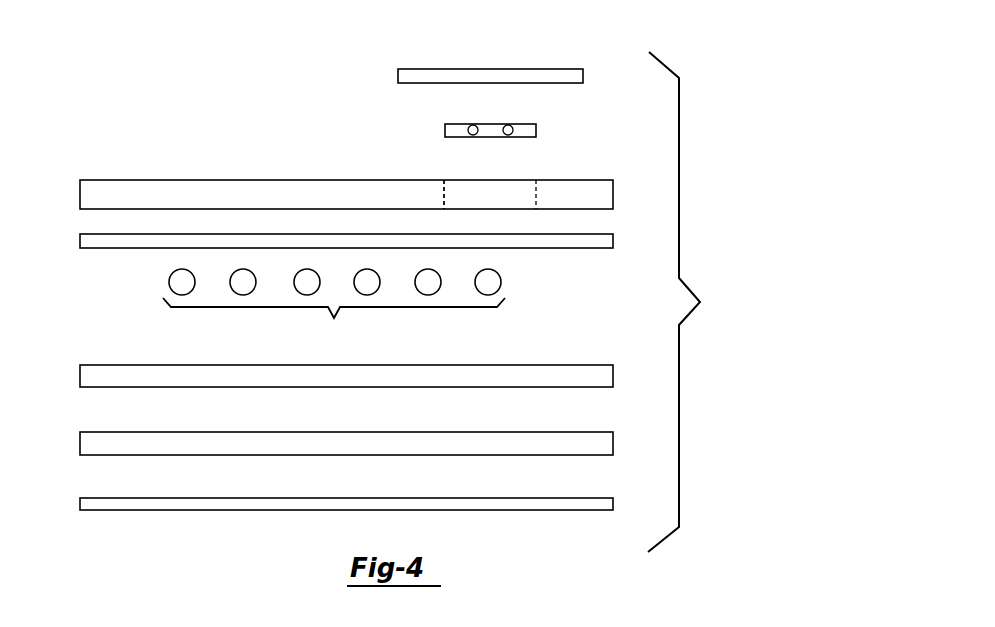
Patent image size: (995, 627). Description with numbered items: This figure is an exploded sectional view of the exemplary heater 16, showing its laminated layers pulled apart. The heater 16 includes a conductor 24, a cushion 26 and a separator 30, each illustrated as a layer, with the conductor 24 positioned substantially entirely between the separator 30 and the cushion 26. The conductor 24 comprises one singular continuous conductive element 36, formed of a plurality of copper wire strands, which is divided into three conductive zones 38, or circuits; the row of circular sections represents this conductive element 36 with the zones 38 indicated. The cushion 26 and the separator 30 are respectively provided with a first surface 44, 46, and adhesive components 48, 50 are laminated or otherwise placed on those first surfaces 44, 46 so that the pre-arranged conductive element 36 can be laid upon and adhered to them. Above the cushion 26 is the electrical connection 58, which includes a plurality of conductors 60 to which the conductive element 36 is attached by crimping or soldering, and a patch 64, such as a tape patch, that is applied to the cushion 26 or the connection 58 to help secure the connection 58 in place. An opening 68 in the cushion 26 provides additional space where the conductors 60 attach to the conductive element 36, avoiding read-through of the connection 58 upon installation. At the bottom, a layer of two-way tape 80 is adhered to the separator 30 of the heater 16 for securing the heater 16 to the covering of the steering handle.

The heater 16 is at (549, 330).
The conductor 24 is at (500, 274).
The cushion 26 is at (595, 183).
The separator 30 is at (85, 443).
The conductive element 36 is at (334, 322).
The conductive zones 38 is at (307, 282).
The first surface 44 is at (90, 217).
The first surface 46 is at (98, 432).
The adhesive component 48 is at (613, 242).
The adhesive component 50 is at (85, 378).
The electrical connection 58 is at (551, 126).
The conductors 60 is at (508, 124).
The patch 64 is at (467, 69).
The opening 68 is at (443, 192).
The two-way tape 80 is at (85, 503).